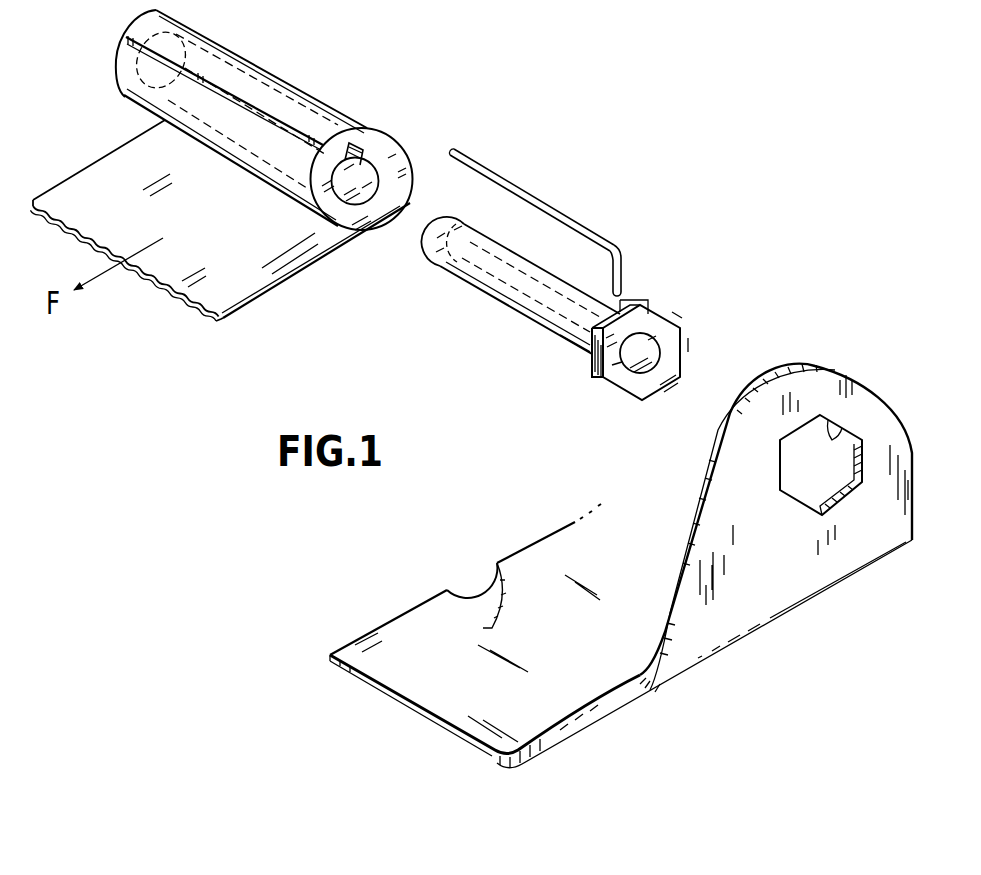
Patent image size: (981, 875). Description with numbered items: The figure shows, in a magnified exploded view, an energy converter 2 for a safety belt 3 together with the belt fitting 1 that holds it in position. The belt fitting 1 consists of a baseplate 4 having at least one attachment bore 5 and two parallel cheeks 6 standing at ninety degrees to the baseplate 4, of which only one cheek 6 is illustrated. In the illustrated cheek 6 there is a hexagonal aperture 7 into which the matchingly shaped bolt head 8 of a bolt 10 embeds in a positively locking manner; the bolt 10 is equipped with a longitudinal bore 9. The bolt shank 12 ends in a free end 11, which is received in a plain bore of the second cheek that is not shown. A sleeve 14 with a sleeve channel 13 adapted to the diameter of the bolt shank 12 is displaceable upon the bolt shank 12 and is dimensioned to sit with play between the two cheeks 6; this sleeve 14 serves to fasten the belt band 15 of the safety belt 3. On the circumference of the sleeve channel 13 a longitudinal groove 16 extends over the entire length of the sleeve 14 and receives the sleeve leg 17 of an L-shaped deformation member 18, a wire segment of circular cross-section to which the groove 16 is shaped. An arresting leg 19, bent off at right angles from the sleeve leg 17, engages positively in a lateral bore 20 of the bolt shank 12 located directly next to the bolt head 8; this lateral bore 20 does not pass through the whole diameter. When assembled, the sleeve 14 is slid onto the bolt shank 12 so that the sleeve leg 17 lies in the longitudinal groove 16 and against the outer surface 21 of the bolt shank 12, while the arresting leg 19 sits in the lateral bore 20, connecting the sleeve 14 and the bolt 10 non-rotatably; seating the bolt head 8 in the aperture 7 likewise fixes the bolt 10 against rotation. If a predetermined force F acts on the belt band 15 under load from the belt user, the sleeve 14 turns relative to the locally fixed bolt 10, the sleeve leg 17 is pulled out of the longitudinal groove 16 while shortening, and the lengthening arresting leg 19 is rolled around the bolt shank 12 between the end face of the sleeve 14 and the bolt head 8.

The belt fitting 1 is at (618, 556).
The energy converter 2 is at (619, 86).
The safety belt 3 is at (203, 313).
The baseplate 4 is at (621, 651).
The attachment bore 5 is at (497, 620).
The cheek 6 is at (773, 502).
The hexagonal aperture 7 is at (836, 438).
The bolt head 8 is at (646, 356).
The longitudinal bore 9 is at (654, 347).
The bolt 10 is at (561, 344).
The free end 11 is at (437, 262).
The bolt shank 12 is at (495, 324).
The sleeve channel 13 is at (372, 178).
The sleeve 14 is at (273, 121).
The belt band 15 is at (220, 254).
The longitudinal groove 16 is at (358, 148).
The sleeve leg 17 is at (564, 196).
The deformation member 18 is at (570, 198).
The arresting leg 19 is at (619, 273).
The lateral bore 20 is at (620, 360).
The outer surface 21 is at (475, 290).